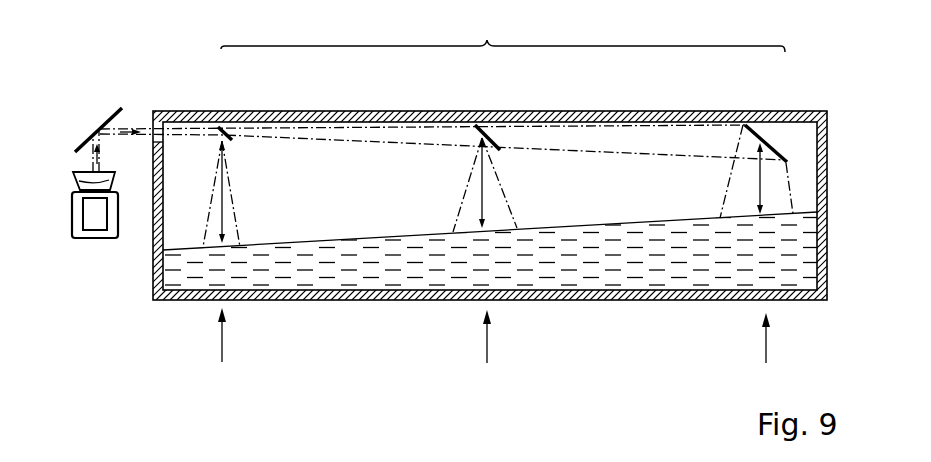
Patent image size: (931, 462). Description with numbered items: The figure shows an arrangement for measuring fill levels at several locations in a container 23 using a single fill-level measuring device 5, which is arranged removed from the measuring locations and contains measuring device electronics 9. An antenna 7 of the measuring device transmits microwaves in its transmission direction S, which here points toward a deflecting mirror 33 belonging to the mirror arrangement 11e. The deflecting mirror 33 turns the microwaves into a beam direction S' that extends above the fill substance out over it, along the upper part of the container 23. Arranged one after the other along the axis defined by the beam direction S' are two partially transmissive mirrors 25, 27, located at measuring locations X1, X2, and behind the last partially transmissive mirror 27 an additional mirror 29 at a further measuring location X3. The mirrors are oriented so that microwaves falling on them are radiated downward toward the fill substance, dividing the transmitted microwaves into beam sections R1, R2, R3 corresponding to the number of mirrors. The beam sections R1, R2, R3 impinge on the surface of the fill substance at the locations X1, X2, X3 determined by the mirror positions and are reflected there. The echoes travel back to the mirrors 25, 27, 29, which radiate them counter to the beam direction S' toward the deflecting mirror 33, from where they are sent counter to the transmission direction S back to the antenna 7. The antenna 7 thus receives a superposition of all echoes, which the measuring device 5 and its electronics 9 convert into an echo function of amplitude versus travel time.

The mirror arrangement 11e is at (503, 34).
The container 23 is at (827, 224).
The partially transmissive mirror 25 is at (225, 127).
The partially transmissive mirror 27 is at (485, 132).
The additional mirror 29 is at (760, 132).
The deflecting mirror 33 is at (88, 137).
The fill-level measuring device 5 is at (95, 238).
The antenna 7 is at (100, 182).
The measuring device electronics 9 is at (102, 226).
The transmission direction S is at (116, 153).
The beam direction S' is at (442, 116).
The beam section R1 is at (223, 187).
The beam section R2 is at (482, 185).
The beam section R3 is at (758, 187).
The measuring location X1 is at (223, 342).
The measuring location X2 is at (488, 345).
The measuring location X3 is at (767, 345).